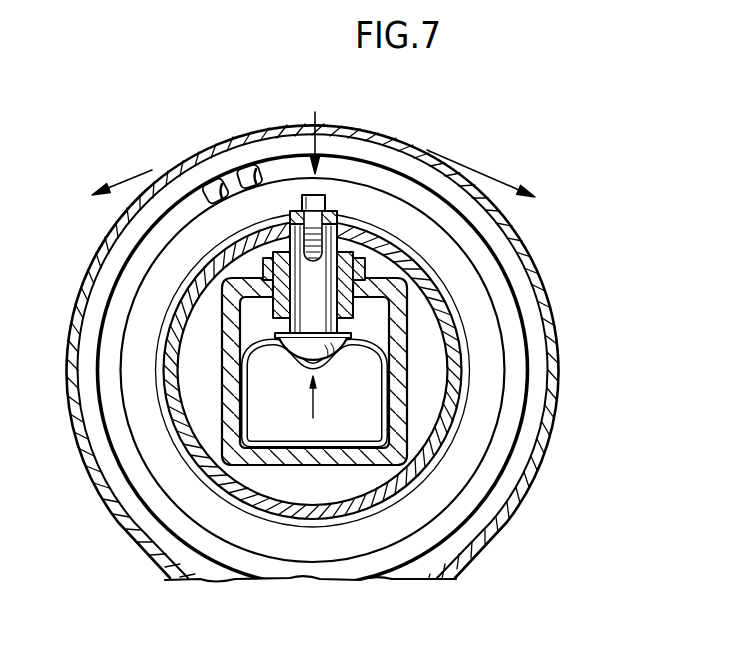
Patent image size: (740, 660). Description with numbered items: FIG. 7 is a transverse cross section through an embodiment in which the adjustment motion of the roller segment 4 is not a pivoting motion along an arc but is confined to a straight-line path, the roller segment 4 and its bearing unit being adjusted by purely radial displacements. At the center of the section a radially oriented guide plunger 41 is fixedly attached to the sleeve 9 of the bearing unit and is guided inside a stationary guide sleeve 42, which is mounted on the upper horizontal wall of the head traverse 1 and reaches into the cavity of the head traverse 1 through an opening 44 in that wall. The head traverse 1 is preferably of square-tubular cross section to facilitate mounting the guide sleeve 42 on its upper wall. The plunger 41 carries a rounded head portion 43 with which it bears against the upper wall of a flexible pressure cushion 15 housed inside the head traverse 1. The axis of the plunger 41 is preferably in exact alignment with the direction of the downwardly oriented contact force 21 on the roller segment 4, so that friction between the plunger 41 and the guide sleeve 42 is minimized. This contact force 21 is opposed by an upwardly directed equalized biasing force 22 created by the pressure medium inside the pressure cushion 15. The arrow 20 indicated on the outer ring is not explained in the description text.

The head traverse 1 is at (395, 368).
The roller segment 4 is at (458, 175).
The sleeve 9 is at (196, 300).
The pressure cushion 15 is at (283, 356).
The rolling direction arrow 20 is at (151, 168).
The contact force 21 is at (317, 112).
The equalized biasing force 22 is at (313, 417).
The guide plunger 41 is at (340, 248).
The guide sleeve 42 is at (370, 272).
The rounded head portion 43 is at (342, 335).
The opening 44 is at (268, 257).